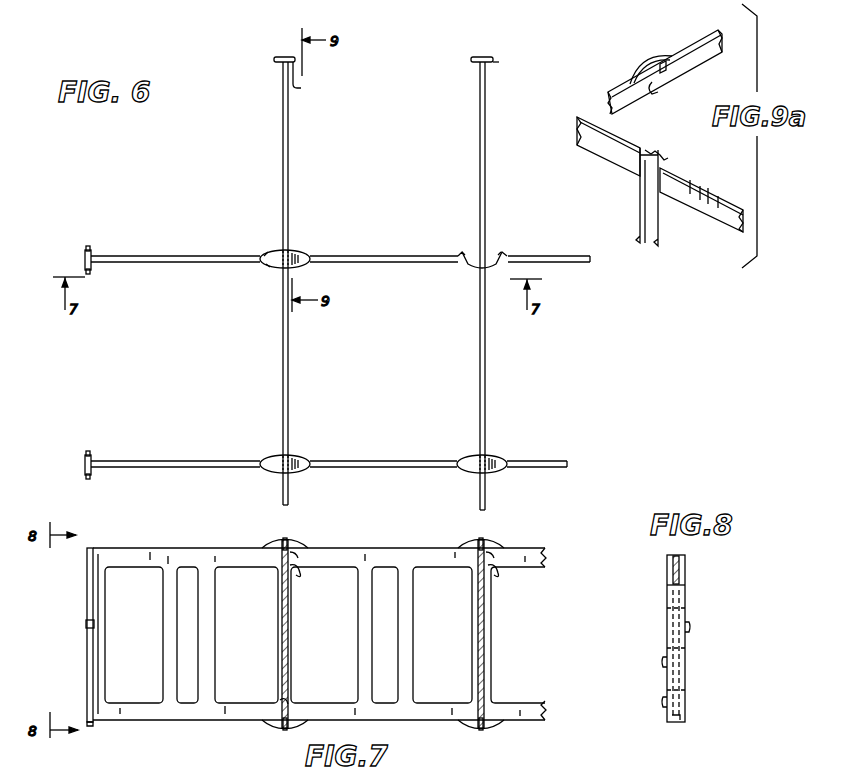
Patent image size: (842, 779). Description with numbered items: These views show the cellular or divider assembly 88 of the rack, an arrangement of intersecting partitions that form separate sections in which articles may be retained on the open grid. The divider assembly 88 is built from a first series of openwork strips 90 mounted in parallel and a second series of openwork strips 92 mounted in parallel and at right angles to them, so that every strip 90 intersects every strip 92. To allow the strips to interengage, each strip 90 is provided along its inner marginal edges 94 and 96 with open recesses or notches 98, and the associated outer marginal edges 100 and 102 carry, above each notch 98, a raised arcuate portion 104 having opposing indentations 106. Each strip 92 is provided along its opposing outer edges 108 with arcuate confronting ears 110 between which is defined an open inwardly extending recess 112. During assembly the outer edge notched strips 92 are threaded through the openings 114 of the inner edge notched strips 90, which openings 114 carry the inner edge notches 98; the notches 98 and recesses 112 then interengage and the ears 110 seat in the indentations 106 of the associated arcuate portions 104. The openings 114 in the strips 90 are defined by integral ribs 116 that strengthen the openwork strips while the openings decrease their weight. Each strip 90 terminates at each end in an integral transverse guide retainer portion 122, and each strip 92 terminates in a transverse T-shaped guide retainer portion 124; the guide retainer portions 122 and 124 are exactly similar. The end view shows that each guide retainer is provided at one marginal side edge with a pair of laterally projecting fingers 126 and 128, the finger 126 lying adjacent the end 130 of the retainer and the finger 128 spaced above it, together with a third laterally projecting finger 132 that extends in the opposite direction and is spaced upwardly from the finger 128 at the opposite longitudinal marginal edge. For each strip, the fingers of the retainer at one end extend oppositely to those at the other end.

In FIG. 6, the cellular or divider assembly 88 is at (352, 230).
In FIG. 6, the openwork strips 90 is at (401, 258).
In FIG. 9a, the openwork strips 90 is at (722, 34).
In FIG. 7, the openwork strips 90 is at (176, 547).
In FIG. 8, the openwork strips 90 is at (710, 612).
In FIG. 6, the openwork strips 92 is at (290, 163).
In FIG. 9a, the openwork strips 92 is at (730, 194).
In FIG. 7, the openwork strips 92 is at (288, 636).
In FIG. 9a, the inner marginal edge 94 is at (706, 67).
In FIG. 7, the inner marginal edge 94 is at (342, 576).
In FIG. 7, the inner marginal edge 96 is at (321, 679).
In FIG. 9a, the open recesses or notches 98 is at (658, 94).
In FIG. 7, the open recesses or notches 98 is at (292, 568).
In FIG. 9a, the outer marginal edge 100 is at (620, 84).
In FIG. 7, the outer marginal edge 100 is at (392, 546).
In FIG. 7, the outer marginal edge 102 is at (408, 724).
In FIG. 6, the raised arcuate portion 104 is at (298, 256).
In FIG. 9a, the raised arcuate portion 104 is at (648, 56).
In FIG. 7, the raised arcuate portion 104 is at (302, 542).
In FIG. 9a, the opposing indentations 106 is at (672, 58).
In FIG. 7, the opposing indentations 106 is at (280, 538).
In FIG. 9a, the outer edges 108 is at (582, 114).
In FIG. 6, the arcuate confronting ears 110 is at (268, 250).
In FIG. 9a, the arcuate confronting ears 110 is at (650, 152).
In FIG. 7, the arcuate confronting ears 110 is at (288, 540).
In FIG. 9a, the open inwardly extending recess 112 is at (640, 178).
In FIG. 7, the openings 114 is at (426, 614).
In FIG. 7, the integral ribs 116 is at (170, 565).
In FIG. 8, the integral ribs 116 is at (682, 566).
In FIG. 6, the transverse guide retainer portion 122 is at (84, 257).
In FIG. 7, the transverse guide retainer portion 122 is at (86, 592).
In FIG. 8, the transverse guide retainer portion 122 is at (667, 620).
In FIG. 6, the T-shaped guide retainer portion 124 is at (286, 56).
In FIG. 8, the laterally projecting finger 126 is at (661, 704).
In FIG. 6, the laterally projecting finger 128 is at (506, 65).
In FIG. 8, the laterally projecting finger 128 is at (661, 664).
In FIG. 7, the end 130 is at (90, 727).
In FIG. 8, the end 130 is at (678, 724).
In FIG. 6, the third laterally projecting finger 132 is at (90, 272).
In FIG. 7, the third laterally projecting finger 132 is at (86, 626).
In FIG. 8, the third laterally projecting finger 132 is at (693, 630).